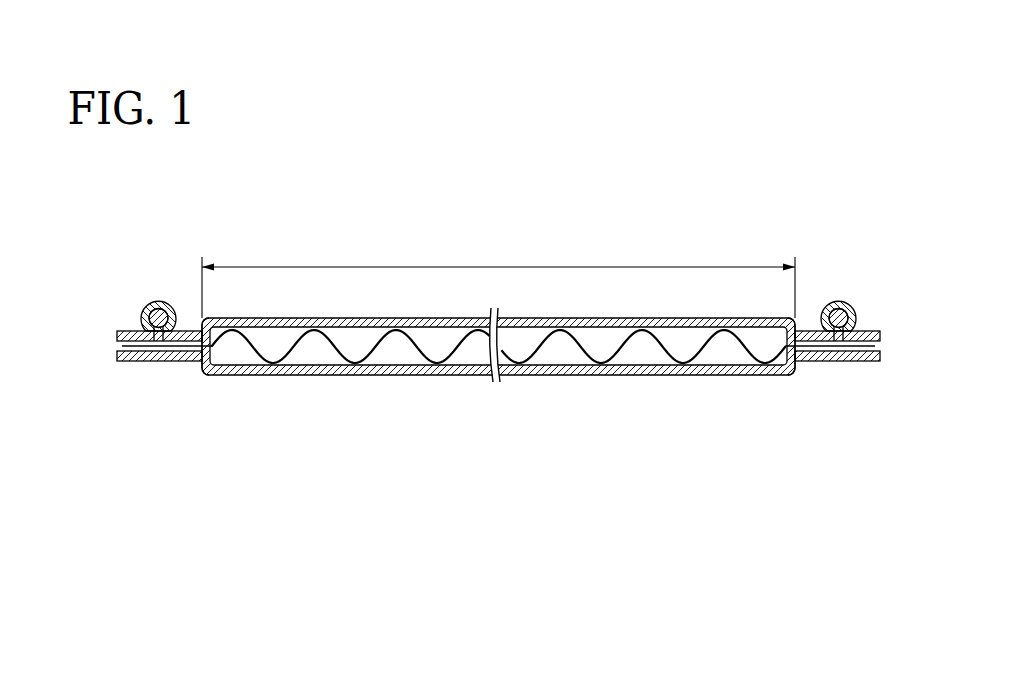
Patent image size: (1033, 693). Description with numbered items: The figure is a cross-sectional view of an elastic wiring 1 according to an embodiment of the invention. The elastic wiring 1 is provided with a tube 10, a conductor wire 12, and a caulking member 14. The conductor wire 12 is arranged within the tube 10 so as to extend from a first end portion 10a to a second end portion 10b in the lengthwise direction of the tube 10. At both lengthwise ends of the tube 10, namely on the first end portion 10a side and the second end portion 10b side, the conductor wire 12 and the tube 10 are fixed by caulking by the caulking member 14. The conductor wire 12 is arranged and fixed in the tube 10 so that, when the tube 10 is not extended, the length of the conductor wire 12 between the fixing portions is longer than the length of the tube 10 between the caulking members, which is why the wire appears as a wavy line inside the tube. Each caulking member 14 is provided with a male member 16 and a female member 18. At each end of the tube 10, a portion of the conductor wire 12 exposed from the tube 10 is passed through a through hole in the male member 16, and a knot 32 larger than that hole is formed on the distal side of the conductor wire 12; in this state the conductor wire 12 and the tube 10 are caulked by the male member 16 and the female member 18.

The elastic wiring 1 is at (608, 217).
The tube 10 is at (363, 376).
The first end portion 10a is at (170, 361).
The second end portion 10b is at (827, 361).
The conductor wire 12 is at (575, 357).
The caulking member 14 is at (146, 307).
The male member 16 is at (131, 363).
The female member 18 is at (160, 300).
The knot 32 is at (151, 346).